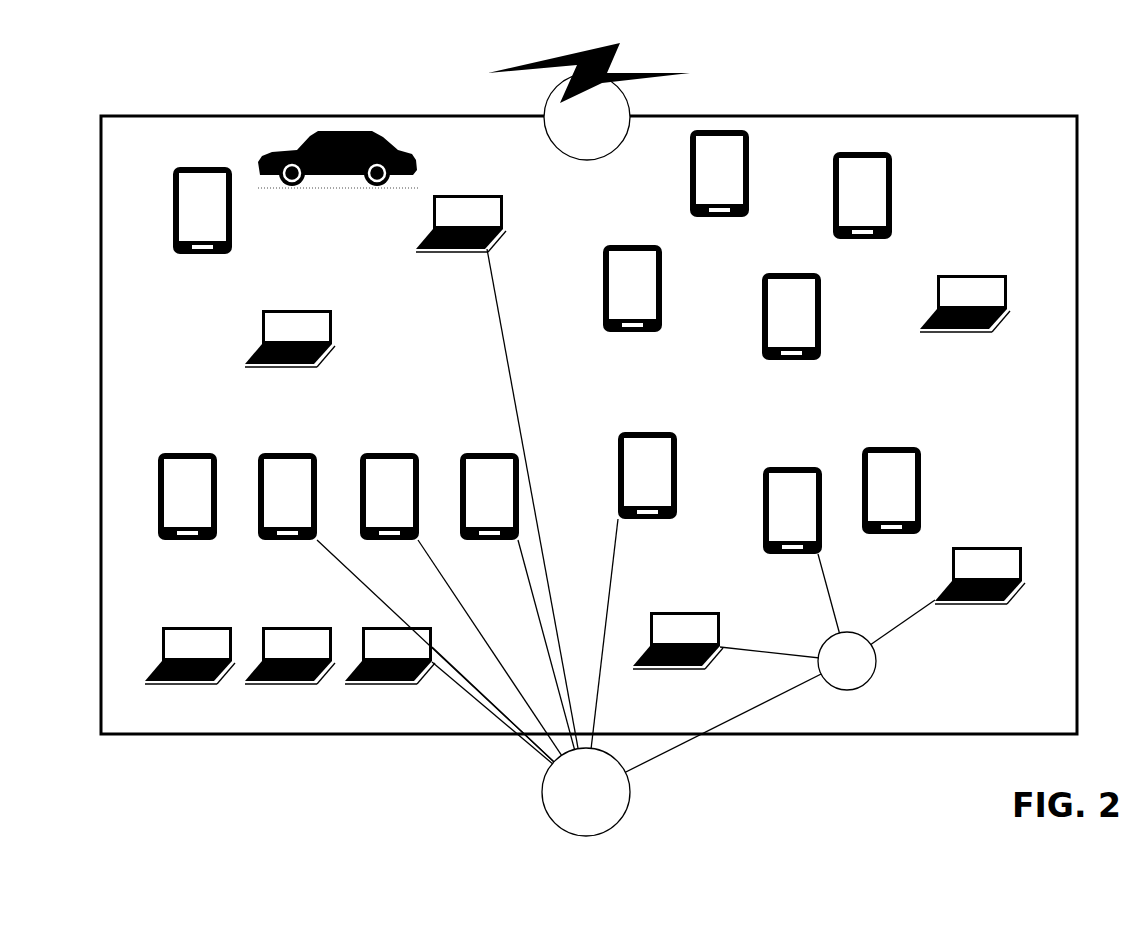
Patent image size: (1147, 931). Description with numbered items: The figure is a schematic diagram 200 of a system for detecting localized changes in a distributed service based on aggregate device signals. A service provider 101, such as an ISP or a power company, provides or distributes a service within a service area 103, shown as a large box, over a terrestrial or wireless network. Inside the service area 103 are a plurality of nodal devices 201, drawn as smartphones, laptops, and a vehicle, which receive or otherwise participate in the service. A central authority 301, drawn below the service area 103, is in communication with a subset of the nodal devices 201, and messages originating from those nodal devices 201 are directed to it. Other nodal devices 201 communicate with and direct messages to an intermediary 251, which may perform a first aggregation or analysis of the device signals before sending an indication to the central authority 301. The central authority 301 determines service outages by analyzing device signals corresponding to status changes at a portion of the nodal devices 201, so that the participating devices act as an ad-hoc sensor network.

The service provider 101 is at (570, 127).
The service area 103 is at (136, 108).
The schematic diagram 200 is at (1119, 88).
The nodal device 201 is at (315, 201).
The intermediary 251 is at (830, 671).
The central authority 301 is at (569, 802).